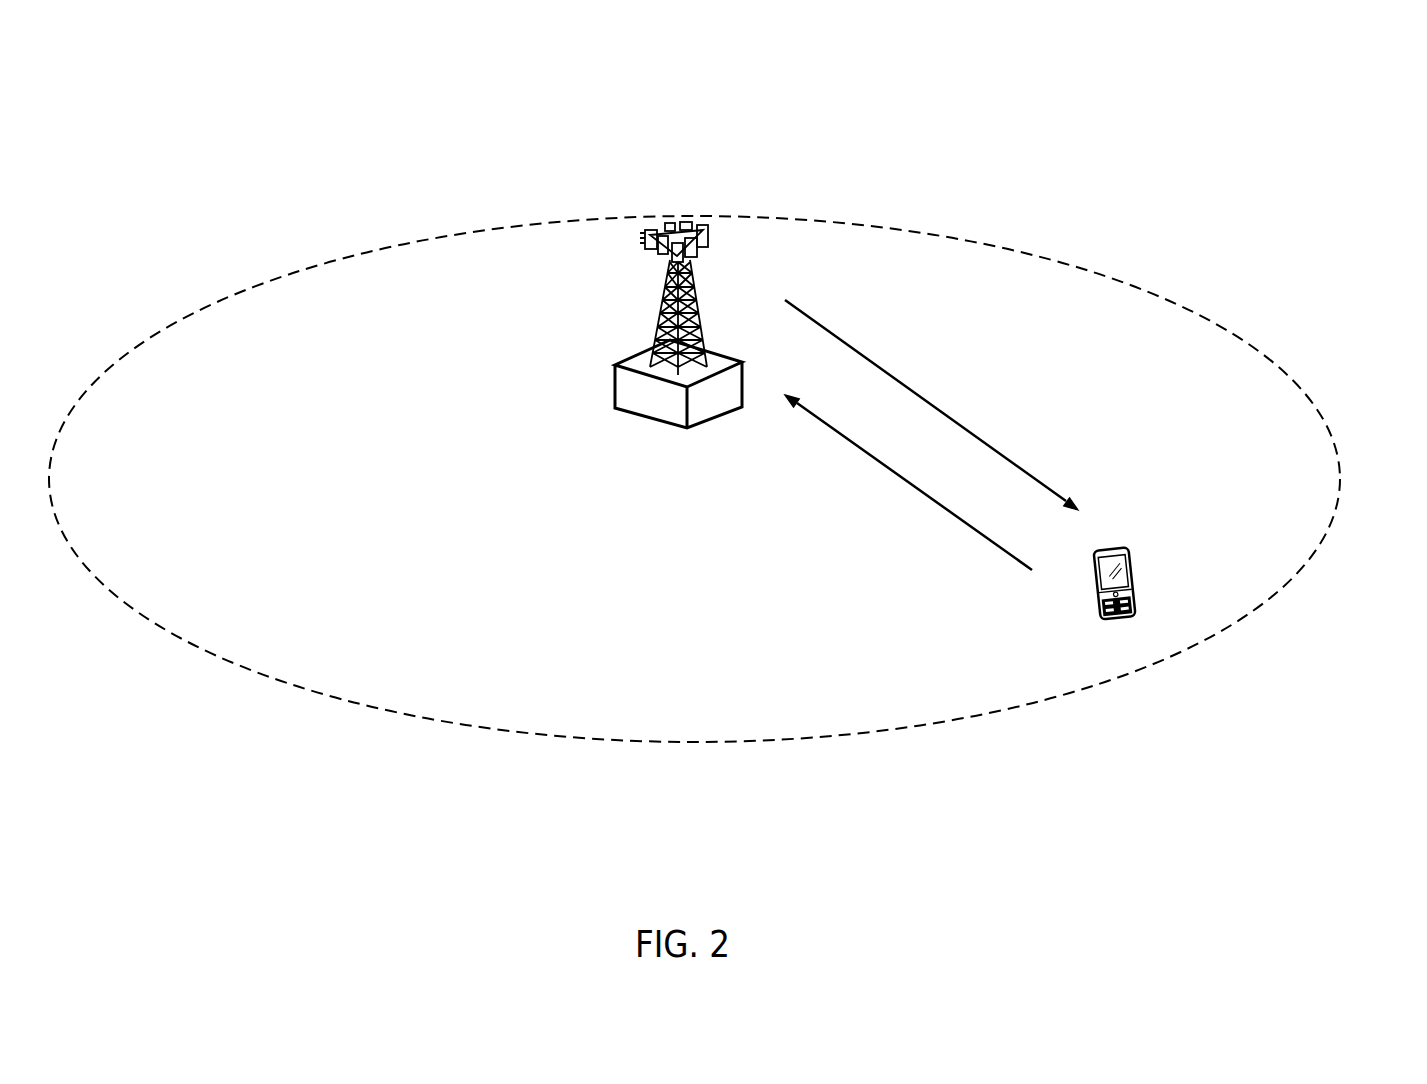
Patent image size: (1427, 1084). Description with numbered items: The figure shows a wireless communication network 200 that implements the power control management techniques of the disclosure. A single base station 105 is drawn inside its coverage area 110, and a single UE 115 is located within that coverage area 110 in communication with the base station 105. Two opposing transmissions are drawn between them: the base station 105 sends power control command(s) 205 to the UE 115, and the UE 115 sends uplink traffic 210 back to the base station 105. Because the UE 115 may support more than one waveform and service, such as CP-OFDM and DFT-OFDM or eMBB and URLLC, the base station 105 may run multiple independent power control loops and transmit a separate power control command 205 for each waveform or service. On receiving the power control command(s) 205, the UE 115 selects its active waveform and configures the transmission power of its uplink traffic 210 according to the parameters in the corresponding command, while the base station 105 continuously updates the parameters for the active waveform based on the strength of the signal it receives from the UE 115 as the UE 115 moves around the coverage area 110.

The wireless communication network 200 is at (1343, 88).
The base station 105 is at (647, 418).
The coverage area 110 is at (883, 227).
The UE 115 is at (1097, 591).
The power control command(s) 205 is at (1023, 418).
The uplink traffic 210 is at (933, 500).